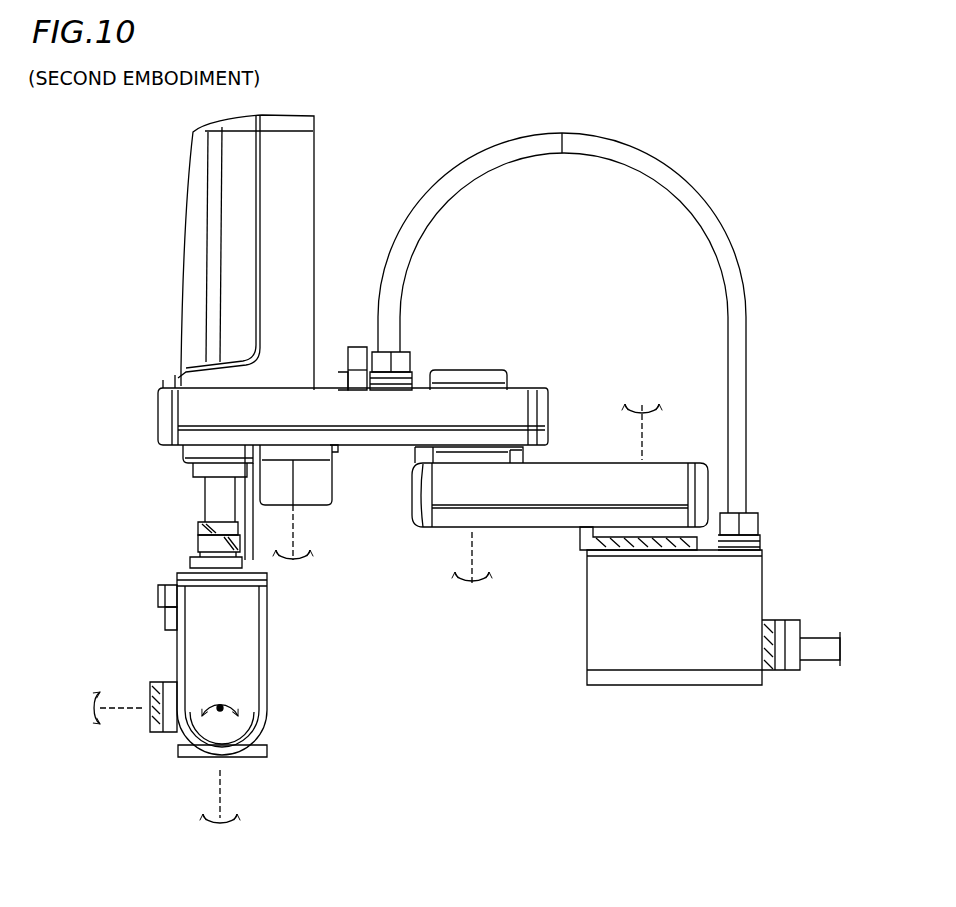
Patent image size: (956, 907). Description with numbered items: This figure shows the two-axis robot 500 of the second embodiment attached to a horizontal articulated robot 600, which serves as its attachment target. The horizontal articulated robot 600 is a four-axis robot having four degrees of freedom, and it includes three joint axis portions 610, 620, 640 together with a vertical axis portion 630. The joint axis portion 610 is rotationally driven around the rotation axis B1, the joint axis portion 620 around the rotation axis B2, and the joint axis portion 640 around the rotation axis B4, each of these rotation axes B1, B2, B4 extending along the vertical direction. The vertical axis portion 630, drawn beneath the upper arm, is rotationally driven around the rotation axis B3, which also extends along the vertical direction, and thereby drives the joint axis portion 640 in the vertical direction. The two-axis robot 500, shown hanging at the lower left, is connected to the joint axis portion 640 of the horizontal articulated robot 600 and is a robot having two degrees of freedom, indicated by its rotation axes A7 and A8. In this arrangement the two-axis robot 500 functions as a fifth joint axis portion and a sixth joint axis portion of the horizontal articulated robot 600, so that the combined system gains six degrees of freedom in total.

The two-axis robot 500 is at (150, 773).
The horizontal articulated robot 600 is at (776, 262).
The joint axis portion 610 is at (680, 428).
The joint axis portion 620 is at (474, 352).
The vertical axis portion 630 is at (326, 515).
The joint axis portion 640 is at (178, 523).
The rotation axis A7 is at (220, 691).
The rotation axis A8 is at (96, 708).
The rotation axis B1 is at (642, 419).
The rotation axis B2 is at (472, 572).
The rotation axis B3 is at (293, 549).
The rotation axis B4 is at (220, 811).